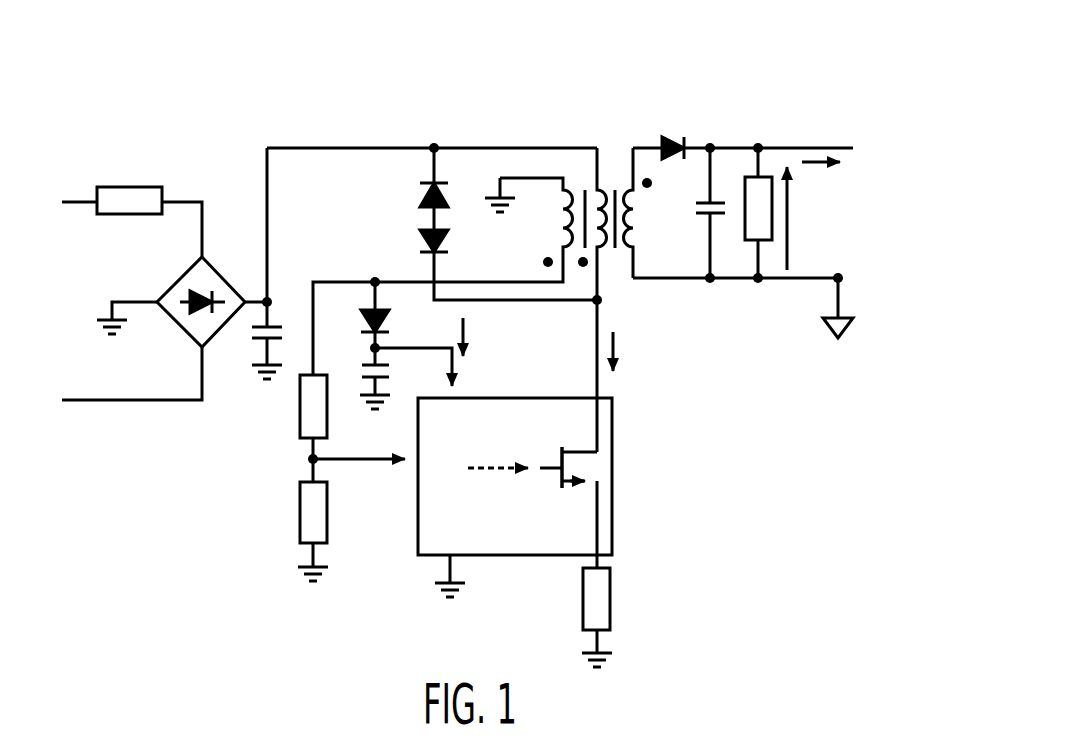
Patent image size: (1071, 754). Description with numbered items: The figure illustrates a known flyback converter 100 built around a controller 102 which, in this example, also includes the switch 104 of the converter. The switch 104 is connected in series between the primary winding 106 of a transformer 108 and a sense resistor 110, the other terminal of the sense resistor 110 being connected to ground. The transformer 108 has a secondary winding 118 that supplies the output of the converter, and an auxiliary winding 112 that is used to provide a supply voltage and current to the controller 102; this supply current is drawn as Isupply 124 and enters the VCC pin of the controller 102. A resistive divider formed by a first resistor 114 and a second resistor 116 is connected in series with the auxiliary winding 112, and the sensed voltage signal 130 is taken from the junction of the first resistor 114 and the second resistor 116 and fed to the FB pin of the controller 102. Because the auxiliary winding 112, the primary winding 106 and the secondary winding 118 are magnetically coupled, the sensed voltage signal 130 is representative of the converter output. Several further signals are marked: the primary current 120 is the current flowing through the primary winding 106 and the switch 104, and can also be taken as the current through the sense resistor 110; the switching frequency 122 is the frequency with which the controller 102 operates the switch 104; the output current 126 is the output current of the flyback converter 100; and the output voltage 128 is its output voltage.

The flyback converter 100 is at (826, 70).
The controller 102 is at (614, 441).
The switch 104 is at (568, 460).
The primary winding 106 is at (613, 189).
The transformer 108 is at (592, 107).
The sense resistor 110 is at (612, 615).
The auxiliary winding 112 is at (560, 212).
The resistor R1 114 is at (300, 425).
The resistor R2 116 is at (300, 523).
The secondary winding 118 is at (633, 226).
The primary current Iprimary 120 is at (696, 365).
The switching frequency Fswitch 122 is at (496, 512).
The supply current Isupply 124 is at (444, 328).
The output current Iout 126 is at (852, 174).
The output voltage Vout 128 is at (840, 258).
The sensed voltage signal 130 is at (380, 463).